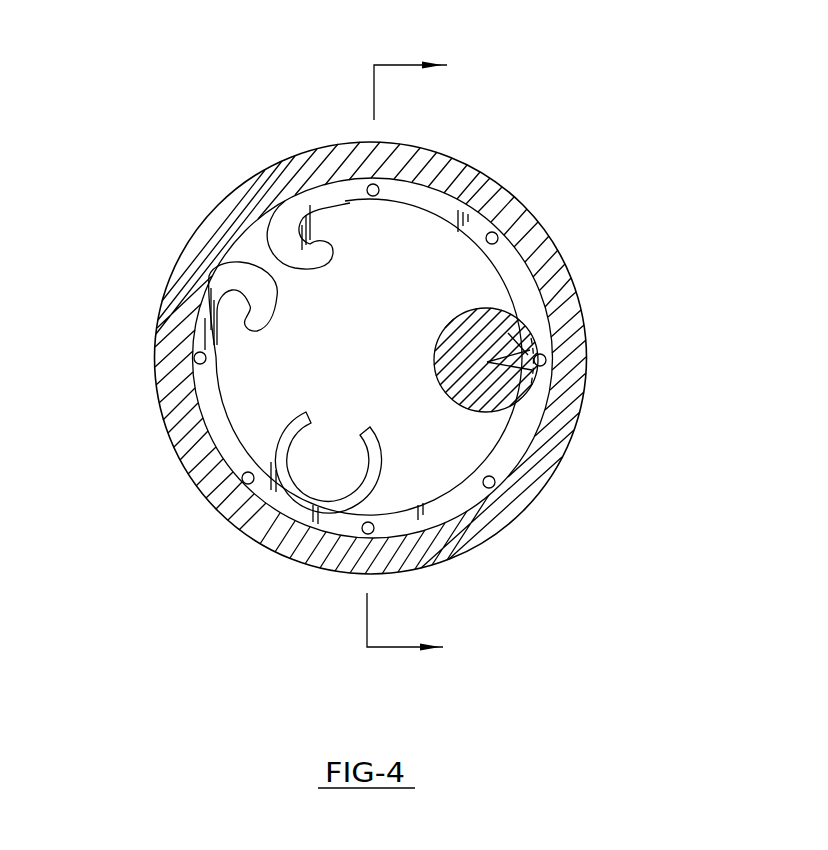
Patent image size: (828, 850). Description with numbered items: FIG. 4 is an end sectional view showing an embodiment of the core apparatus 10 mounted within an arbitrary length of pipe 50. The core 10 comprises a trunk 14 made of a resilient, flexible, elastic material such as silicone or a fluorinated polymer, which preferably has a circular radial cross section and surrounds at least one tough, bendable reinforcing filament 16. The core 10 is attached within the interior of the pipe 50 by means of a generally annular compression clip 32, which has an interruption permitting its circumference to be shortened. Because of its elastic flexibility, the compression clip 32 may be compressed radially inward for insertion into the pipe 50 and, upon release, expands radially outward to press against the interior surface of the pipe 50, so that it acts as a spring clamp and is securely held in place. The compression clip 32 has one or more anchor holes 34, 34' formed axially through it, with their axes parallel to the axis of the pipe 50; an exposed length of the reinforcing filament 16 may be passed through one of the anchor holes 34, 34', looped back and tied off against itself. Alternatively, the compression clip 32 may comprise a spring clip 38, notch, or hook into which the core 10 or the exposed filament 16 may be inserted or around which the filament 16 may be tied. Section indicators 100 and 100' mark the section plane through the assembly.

The core apparatus 10 is at (508, 414).
The trunk 14 is at (527, 328).
The reinforcing filament 16 is at (535, 362).
The compression clip 32 is at (225, 438).
The anchor hole 34 is at (451, 152).
The anchor hole 34' is at (467, 566).
The spring clip 38 is at (372, 463).
The pipe 50 is at (560, 255).
The section line 100 is at (429, 87).
The section line 100' is at (428, 627).